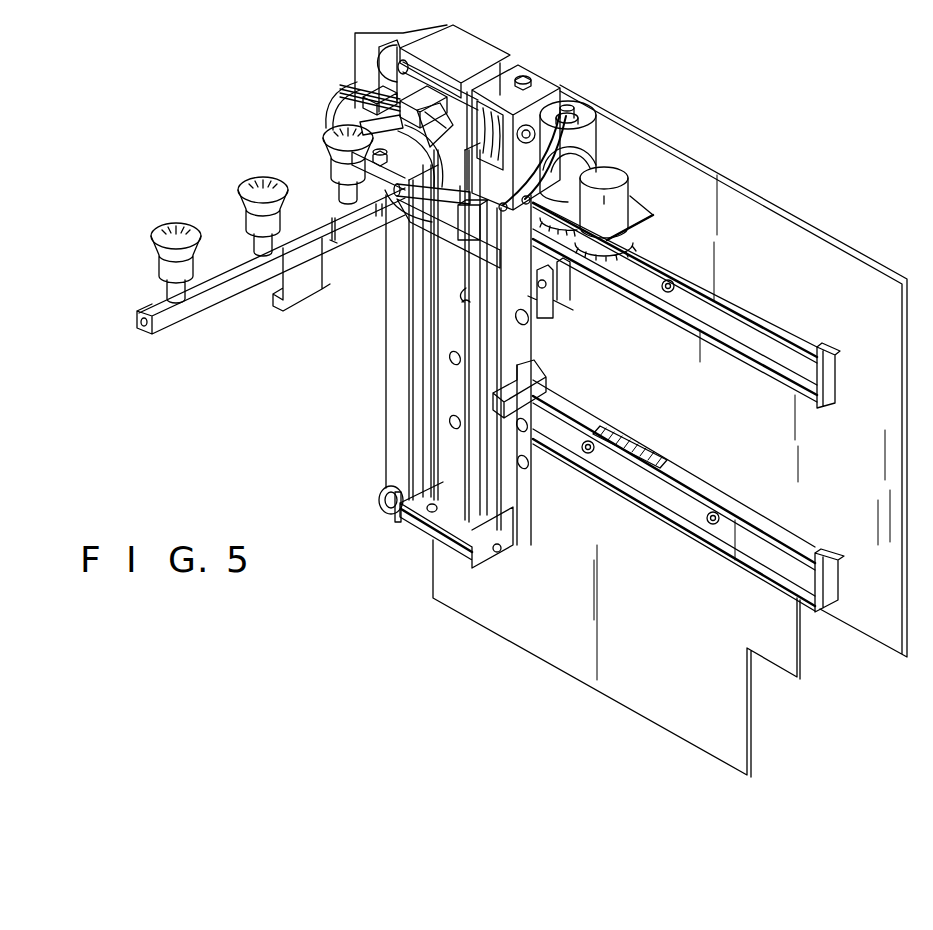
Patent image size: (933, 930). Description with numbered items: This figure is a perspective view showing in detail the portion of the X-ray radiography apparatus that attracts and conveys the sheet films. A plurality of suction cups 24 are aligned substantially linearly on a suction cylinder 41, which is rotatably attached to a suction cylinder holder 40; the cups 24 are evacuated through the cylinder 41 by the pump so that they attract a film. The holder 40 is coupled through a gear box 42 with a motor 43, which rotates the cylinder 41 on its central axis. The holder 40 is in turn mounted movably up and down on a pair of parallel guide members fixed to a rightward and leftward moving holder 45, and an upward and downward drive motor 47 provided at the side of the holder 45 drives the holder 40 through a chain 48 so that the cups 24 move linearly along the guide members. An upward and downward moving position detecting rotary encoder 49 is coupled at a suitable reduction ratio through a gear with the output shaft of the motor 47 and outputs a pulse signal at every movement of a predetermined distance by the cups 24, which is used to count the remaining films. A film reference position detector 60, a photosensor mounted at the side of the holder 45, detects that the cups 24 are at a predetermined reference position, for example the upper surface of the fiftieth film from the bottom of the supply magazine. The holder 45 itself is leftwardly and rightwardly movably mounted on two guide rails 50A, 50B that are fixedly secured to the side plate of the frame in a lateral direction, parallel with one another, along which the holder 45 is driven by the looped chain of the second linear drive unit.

The cups 24 is at (327, 142).
The suction cylinder holder 40 is at (418, 226).
The suction cylinder 41 is at (195, 305).
The gear box 42 is at (323, 121).
The motor 43 is at (331, 110).
The rightward and leftward moving holder 45 is at (410, 530).
The upward and downward drive motor 47 is at (592, 105).
The chain 48 is at (386, 416).
The upward and downward moving position detecting rotary encoder 49 is at (620, 181).
The guide rail 50A is at (783, 328).
The guide rail 50B is at (702, 548).
The film reference position detector 60 is at (533, 398).